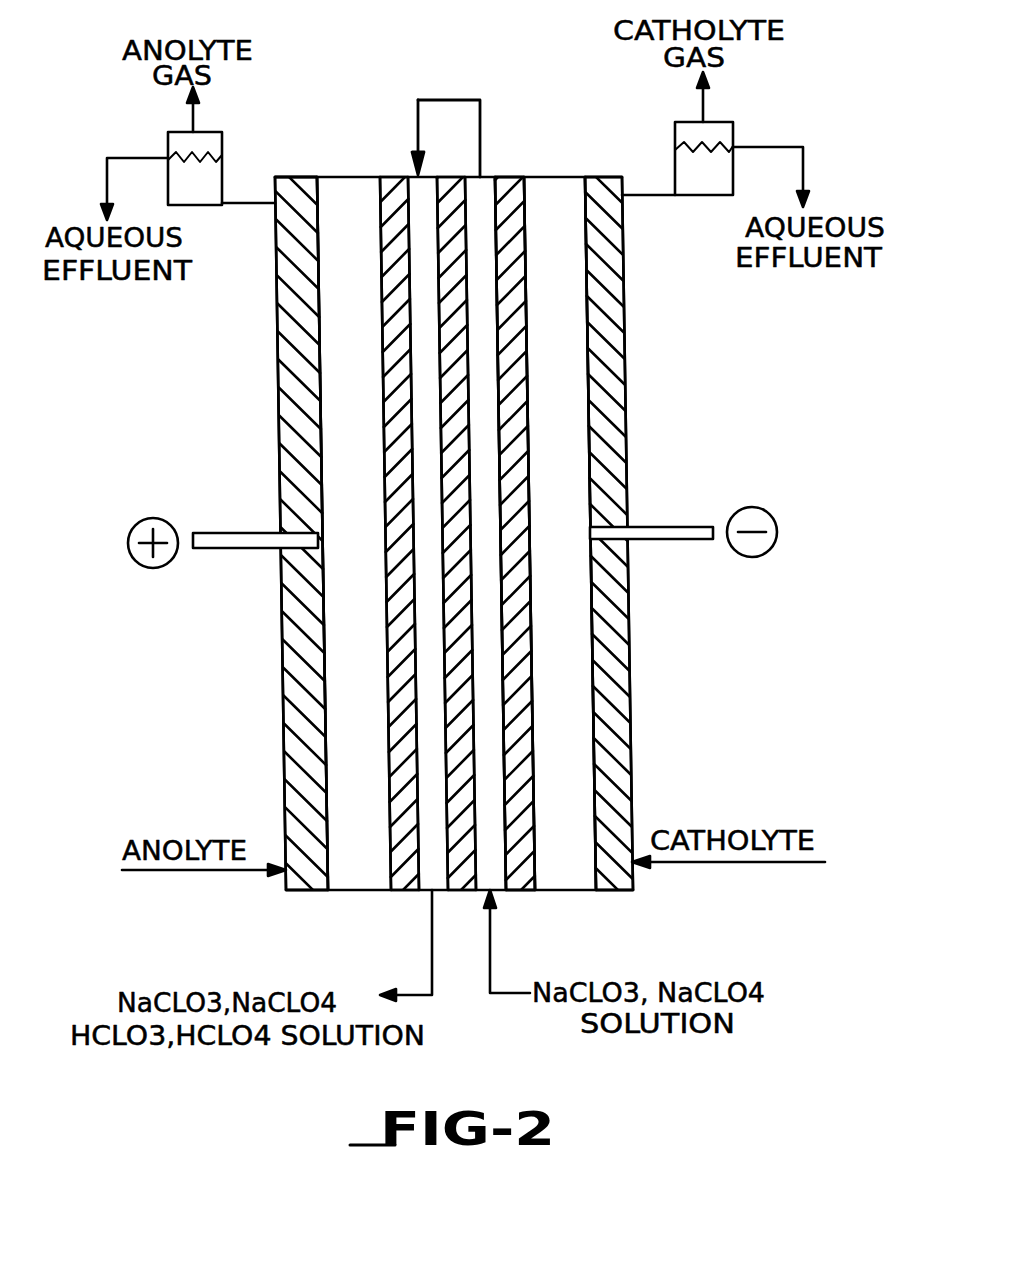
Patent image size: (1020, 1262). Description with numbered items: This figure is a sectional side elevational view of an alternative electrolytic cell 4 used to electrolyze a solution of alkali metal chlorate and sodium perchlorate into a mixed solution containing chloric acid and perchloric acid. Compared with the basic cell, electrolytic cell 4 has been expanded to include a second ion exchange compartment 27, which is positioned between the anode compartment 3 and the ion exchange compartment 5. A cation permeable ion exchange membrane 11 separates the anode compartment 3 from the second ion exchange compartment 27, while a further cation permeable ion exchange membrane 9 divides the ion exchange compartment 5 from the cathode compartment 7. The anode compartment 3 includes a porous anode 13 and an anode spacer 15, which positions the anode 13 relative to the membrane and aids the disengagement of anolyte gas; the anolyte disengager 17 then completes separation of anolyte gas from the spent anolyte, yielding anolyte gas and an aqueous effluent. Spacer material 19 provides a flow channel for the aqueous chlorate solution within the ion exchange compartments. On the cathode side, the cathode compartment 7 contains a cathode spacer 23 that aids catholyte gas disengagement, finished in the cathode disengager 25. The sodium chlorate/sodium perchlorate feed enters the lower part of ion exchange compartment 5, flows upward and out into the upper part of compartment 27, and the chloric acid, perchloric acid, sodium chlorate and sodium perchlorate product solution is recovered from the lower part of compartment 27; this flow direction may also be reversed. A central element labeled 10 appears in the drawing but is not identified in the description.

The electrolytic cell 4 is at (282, 673).
The anode spacer 15 is at (275, 372).
The anode 13 is at (320, 176).
The anode compartment 3 is at (360, 892).
The cation permeable ion exchange membrane 11 is at (388, 180).
The second ion exchange compartment 27 is at (418, 448).
The central partition 10 is at (460, 890).
The spacer material 19 is at (483, 187).
The cation permeable ion exchange membrane 9 is at (520, 890).
The ion exchange compartment 5 is at (487, 487).
The cathode compartment 7 is at (567, 187).
The cathode spacer 23 is at (613, 693).
The anolyte disengager 17 is at (207, 205).
The cathode disengager 25 is at (695, 183).